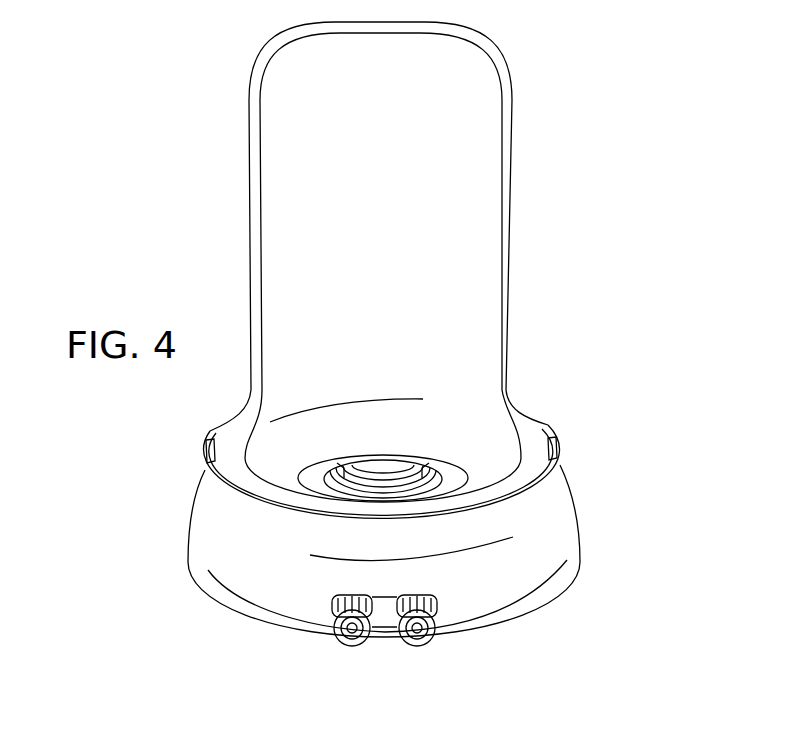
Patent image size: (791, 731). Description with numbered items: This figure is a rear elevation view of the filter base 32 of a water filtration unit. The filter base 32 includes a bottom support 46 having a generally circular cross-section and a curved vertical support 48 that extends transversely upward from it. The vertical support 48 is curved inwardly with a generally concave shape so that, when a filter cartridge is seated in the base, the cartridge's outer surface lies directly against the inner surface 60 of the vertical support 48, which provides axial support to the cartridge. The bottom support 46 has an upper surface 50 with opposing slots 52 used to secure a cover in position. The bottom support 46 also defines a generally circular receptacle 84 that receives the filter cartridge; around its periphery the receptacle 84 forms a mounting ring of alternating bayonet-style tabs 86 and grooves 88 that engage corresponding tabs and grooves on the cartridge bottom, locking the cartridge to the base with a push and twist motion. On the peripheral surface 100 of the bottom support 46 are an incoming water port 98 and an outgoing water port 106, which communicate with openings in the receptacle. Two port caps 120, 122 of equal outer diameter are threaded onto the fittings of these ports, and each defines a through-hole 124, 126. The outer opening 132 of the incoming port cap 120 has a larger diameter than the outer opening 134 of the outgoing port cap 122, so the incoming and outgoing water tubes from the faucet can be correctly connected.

The filter base 32 is at (218, 201).
The bottom support 46 is at (193, 531).
The vertical support 48 is at (457, 133).
The upper surface 50 is at (232, 447).
The opposing slots 52 is at (207, 447).
The inner surface 60 is at (400, 230).
The receptacle 84 is at (420, 443).
The bayonet-style tabs 86 is at (318, 473).
The grooves 88 is at (375, 463).
The incoming water port 98 is at (357, 586).
The peripheral surface 100 is at (515, 567).
The outgoing water port 106 is at (408, 586).
The port cap 120 is at (343, 595).
The port cap 122 is at (424, 597).
The through-hole 124 is at (352, 633).
The through-hole 126 is at (417, 633).
The outer opening 132 is at (337, 643).
The outer opening 134 is at (428, 643).